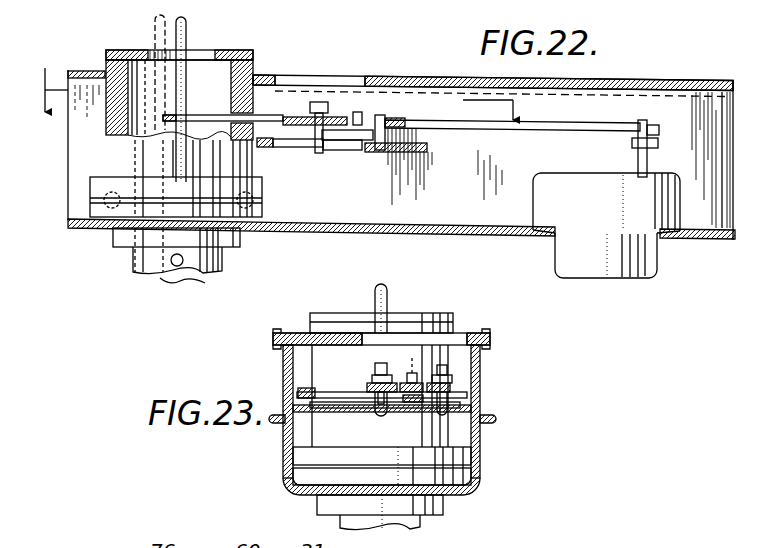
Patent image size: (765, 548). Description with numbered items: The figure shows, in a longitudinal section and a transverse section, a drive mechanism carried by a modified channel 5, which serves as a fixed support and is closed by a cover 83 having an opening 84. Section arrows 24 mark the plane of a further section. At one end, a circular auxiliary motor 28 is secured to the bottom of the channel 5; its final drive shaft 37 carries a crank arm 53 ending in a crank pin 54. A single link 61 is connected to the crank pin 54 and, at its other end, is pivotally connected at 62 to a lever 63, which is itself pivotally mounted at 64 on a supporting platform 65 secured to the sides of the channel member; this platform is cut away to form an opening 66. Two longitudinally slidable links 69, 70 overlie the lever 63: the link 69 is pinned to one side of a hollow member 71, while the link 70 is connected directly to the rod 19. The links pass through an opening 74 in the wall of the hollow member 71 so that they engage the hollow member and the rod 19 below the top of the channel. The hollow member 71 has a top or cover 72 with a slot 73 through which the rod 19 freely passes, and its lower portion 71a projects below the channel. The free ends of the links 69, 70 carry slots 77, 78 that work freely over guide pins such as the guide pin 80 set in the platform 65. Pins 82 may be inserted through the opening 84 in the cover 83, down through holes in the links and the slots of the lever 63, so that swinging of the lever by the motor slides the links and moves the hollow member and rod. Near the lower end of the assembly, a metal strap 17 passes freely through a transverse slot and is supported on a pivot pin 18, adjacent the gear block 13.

In FIG. 22, the channel 5 is at (462, 226).
In FIG. 23, the channel 5 is at (480, 410).
In FIG. 22, the gear block 13 is at (113, 198).
In FIG. 22, the metal strap 17 is at (195, 280).
In FIG. 22, the pivot pin 18 is at (172, 264).
In FIG. 22, the rod 19 is at (188, 37).
In FIG. 23, the rod 19 is at (389, 290).
In FIG. 22, the section line 24 is at (286, 105).
In FIG. 22, the auxiliary motor 28 is at (562, 182).
In FIG. 22, the final drive shaft 37 is at (650, 160).
In FIG. 22, the crank arm 53 is at (636, 142).
In FIG. 22, the crank pin 54 is at (645, 122).
In FIG. 22, the link 61 is at (510, 130).
In FIG. 22, the pivot connection 62 is at (356, 114).
In FIG. 23, the pivot connection 62 is at (411, 373).
In FIG. 22, the lever 63 is at (300, 132).
In FIG. 23, the lever 63 is at (330, 392).
In FIG. 23, the pivot 64 is at (300, 393).
In FIG. 22, the supporting platform 65 is at (430, 147).
In FIG. 23, the supporting platform 65 is at (325, 412).
In FIG. 22, the opening 66 is at (358, 138).
In FIG. 23, the opening 66 is at (365, 412).
In FIG. 23, the slidable link 69 is at (470, 392).
In FIG. 22, the slidable link 70 is at (278, 110).
In FIG. 23, the slidable link 70 is at (372, 393).
In FIG. 22, the hollow member 71 is at (112, 157).
In FIG. 23, the hollow member 71 is at (456, 332).
In FIG. 22, the housing extension 71a is at (130, 266).
In FIG. 23, the housing extension 71a is at (418, 520).
In FIG. 22, the cover 72 is at (235, 52).
In FIG. 23, the cover 72 is at (437, 315).
In FIG. 22, the slot 73 is at (202, 62).
In FIG. 22, the opening 74 is at (232, 118).
In FIG. 23, the slot 77 is at (422, 402).
In FIG. 22, the slot 78 is at (398, 120).
In FIG. 23, the slot 78 is at (395, 412).
In FIG. 22, the guide pin 80 is at (381, 116).
In FIG. 22, the pins 82 is at (320, 155).
In FIG. 23, the pins 82 is at (494, 366).
In FIG. 22, the cover 83 is at (436, 73).
In FIG. 23, the cover 83 is at (298, 330).
In FIG. 22, the opening 84 is at (323, 80).
In FIG. 23, the opening 84 is at (382, 340).